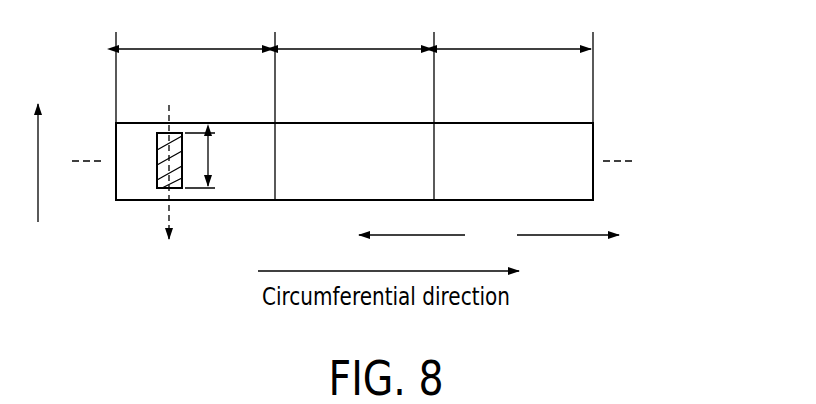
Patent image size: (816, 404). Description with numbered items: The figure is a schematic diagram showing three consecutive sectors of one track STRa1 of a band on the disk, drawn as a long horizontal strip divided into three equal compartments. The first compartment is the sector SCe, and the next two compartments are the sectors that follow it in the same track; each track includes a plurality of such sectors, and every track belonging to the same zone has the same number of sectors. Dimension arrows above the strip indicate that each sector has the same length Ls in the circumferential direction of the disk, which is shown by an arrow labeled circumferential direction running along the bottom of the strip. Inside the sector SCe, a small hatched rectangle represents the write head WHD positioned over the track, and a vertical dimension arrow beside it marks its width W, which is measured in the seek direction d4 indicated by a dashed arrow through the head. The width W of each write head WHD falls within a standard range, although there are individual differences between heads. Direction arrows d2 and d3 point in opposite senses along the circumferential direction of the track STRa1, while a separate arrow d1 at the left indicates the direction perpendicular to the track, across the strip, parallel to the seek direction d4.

The track STRa1 is at (660, 156).
The sector SCe is at (202, 122).
The length of sector Ls is at (354, 33).
The write head WHD is at (158, 162).
The width of write head W is at (212, 162).
The direction d1 is at (20, 163).
The direction d2 is at (586, 235).
The direction d3 is at (396, 235).
The seek direction d4 is at (170, 205).